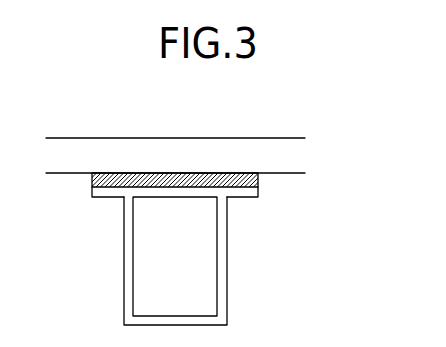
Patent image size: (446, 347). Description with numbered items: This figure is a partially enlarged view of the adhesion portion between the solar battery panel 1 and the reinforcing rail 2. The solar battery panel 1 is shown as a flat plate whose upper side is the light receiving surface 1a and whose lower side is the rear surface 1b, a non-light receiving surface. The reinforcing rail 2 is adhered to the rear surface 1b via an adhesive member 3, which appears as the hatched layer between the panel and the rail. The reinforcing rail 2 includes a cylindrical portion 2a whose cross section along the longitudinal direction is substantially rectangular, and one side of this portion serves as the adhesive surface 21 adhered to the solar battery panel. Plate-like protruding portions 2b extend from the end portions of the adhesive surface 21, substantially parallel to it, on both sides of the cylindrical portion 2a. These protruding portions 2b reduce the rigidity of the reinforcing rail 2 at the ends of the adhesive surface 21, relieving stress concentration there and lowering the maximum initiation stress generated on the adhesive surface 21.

The solar battery panel 1 is at (175, 172).
The light receiving surface 1a is at (121, 138).
The rear surface 1b is at (64, 160).
The reinforcing rail 2 is at (214, 256).
The cylindrical portion 2a is at (227, 290).
The protruding portions 2b is at (106, 197).
The adhesive member 3 is at (187, 146).
The adhesive surface 21 is at (190, 173).